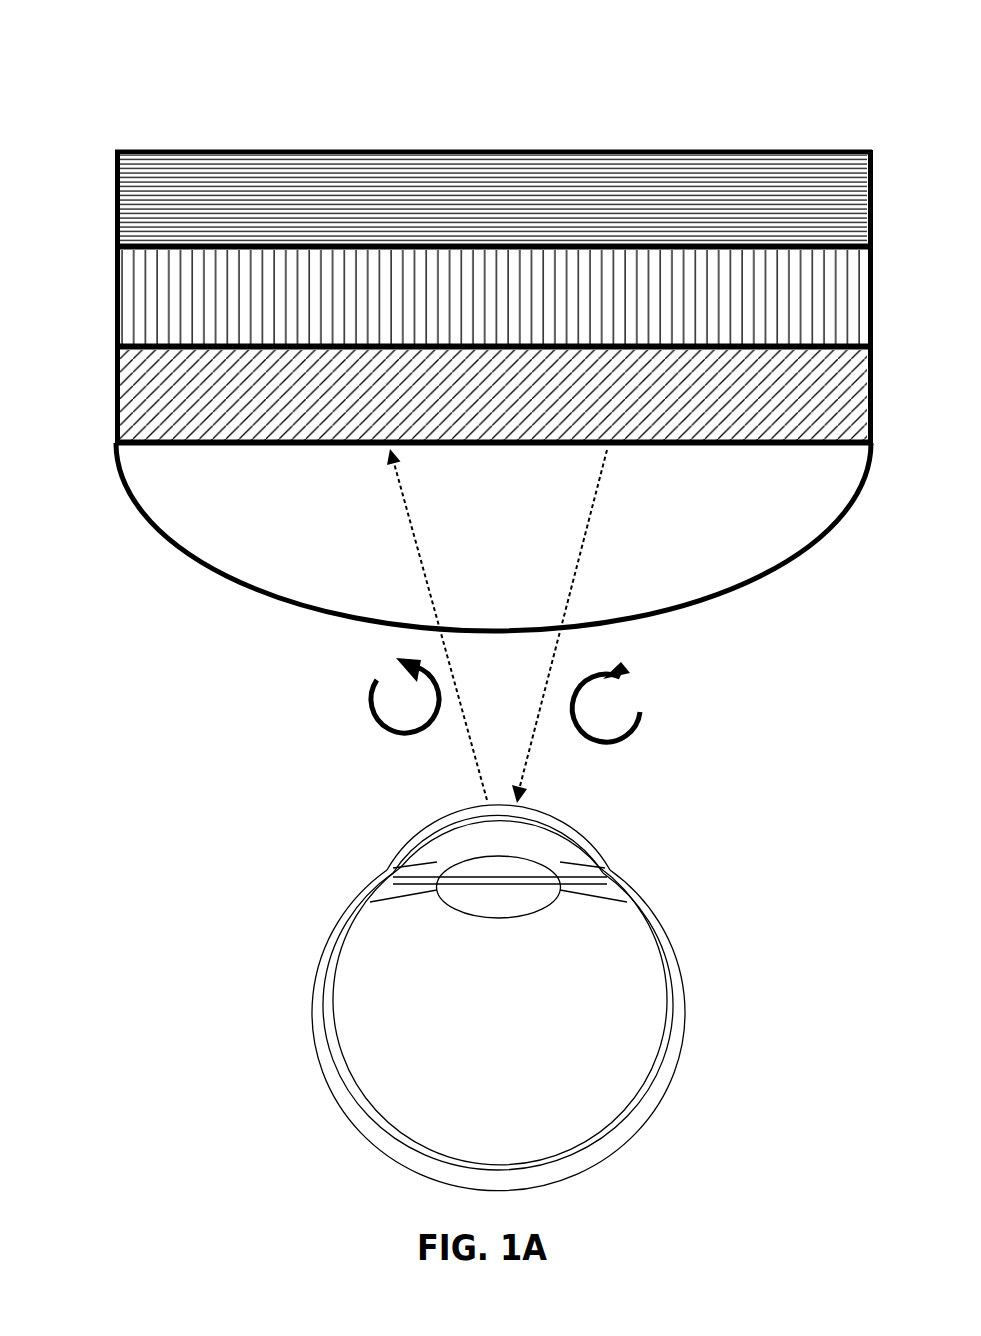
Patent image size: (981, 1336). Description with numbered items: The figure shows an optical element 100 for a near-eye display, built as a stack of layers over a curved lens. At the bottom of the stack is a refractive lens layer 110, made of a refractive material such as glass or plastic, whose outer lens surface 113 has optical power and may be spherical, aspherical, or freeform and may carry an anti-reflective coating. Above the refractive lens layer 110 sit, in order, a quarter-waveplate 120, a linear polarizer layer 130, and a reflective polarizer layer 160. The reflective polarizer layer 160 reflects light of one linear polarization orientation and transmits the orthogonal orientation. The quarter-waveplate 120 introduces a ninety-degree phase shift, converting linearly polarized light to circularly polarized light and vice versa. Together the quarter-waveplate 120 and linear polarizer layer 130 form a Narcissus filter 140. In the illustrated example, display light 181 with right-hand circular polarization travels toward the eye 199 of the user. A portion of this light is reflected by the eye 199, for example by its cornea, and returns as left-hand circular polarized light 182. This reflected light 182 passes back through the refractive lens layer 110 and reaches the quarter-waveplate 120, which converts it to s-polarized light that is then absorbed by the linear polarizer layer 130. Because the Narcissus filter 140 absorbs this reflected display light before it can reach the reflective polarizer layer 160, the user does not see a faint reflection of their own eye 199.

The optical element 100 is at (878, 30).
The reflective polarizer layer 160 is at (100, 248).
The linear polarizer layer 130 is at (100, 345).
The quarter-waveplate 120 is at (100, 443).
The Narcissus filter 140 is at (883, 248).
The refractive lens layer 110 is at (493, 542).
The lens surface 113 is at (742, 588).
The left-hand circular polarized light 182 is at (373, 712).
The display light 181 is at (640, 712).
The eye 199 is at (675, 955).